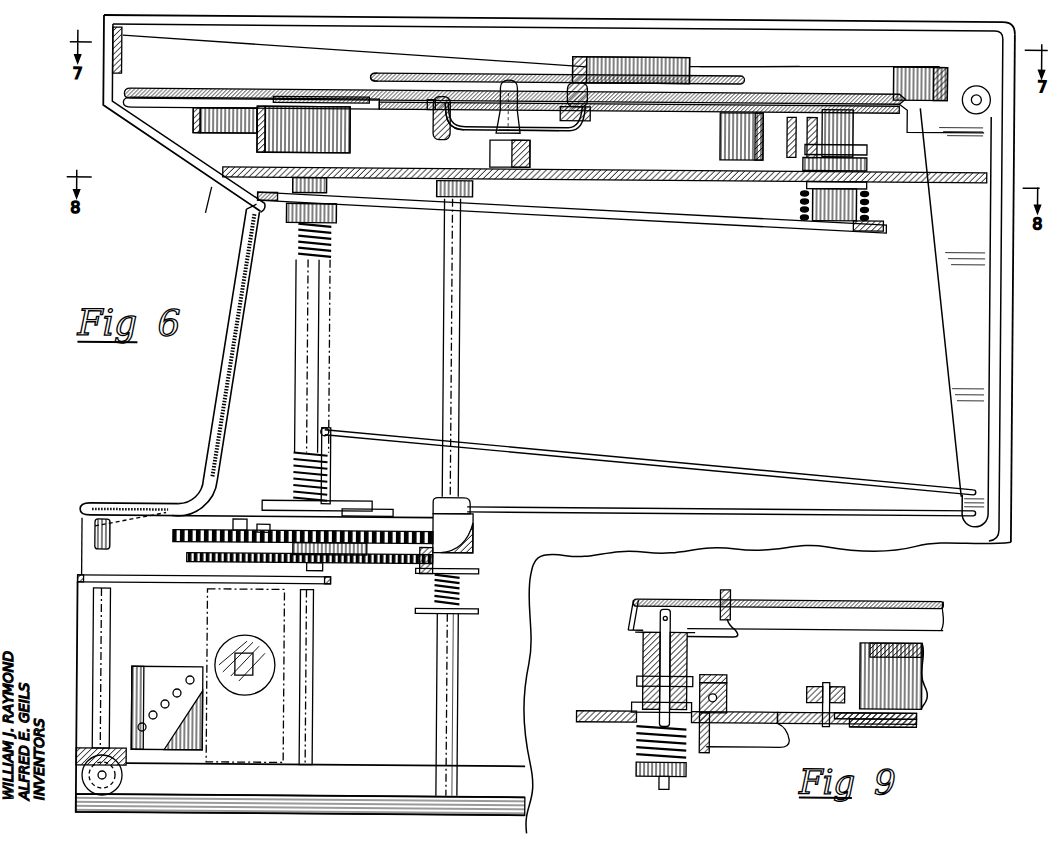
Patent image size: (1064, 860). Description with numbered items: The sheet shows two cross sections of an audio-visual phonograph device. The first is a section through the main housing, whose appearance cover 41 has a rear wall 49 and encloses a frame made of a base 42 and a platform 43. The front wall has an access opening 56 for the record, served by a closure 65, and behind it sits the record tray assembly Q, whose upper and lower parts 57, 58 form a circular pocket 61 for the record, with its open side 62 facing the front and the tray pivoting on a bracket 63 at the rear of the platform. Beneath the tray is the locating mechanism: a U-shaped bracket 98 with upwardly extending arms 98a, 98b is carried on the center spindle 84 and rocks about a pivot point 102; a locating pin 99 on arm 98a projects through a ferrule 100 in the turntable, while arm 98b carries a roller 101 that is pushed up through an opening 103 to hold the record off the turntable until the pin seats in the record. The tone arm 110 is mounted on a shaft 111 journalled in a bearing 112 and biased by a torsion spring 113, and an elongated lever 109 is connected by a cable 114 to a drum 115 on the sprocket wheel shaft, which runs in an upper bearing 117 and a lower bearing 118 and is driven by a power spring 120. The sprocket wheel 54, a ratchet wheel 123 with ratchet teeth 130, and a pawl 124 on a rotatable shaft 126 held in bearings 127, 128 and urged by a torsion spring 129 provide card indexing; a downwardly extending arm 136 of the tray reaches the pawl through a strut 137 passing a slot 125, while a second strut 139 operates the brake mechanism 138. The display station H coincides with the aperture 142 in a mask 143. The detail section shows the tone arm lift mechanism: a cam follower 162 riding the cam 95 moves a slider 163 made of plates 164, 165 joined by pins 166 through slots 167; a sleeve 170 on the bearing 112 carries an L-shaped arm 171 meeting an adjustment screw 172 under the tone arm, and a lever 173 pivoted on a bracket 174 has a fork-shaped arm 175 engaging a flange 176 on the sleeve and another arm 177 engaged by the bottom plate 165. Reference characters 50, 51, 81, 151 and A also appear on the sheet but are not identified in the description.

In FIG. 6, the appearance cover 41 is at (672, 16).
In FIG. 6, the base 42 is at (363, 764).
In FIG. 9, the platform 43 is at (596, 719).
In FIG. 6, the rear wall 49 is at (1016, 329).
In FIG. 6, the inclined panel 50 is at (240, 262).
In FIG. 6, the bottom plate 51 is at (110, 503).
In FIG. 6, the sprocket wheel 54 is at (177, 536).
In FIG. 6, the access opening 56 is at (213, 188).
In FIG. 6, the upper tray part 57 is at (415, 76).
In FIG. 6, the lower tray part 58 is at (163, 100).
In FIG. 6, the circular pocket 61 is at (645, 88).
In FIG. 6, the open side 62 is at (371, 78).
In FIG. 6, the bracket 63 is at (979, 80).
In FIG. 6, the closure 65 is at (166, 146).
In FIG. 6, the channel 81 is at (711, 62).
In FIG. 6, the center spindle 84 is at (508, 77).
In FIG. 9, the cam 95 is at (865, 666).
In FIG. 6, the U-shaped bracket 98 is at (574, 127).
In FIG. 6, the bracket arm 98a is at (540, 122).
In FIG. 6, the bracket arm 98b is at (452, 127).
In FIG. 6, the locating pin 99 is at (584, 79).
In FIG. 6, the ferrule 100 is at (594, 110).
In FIG. 6, the roller 101 is at (434, 130).
In FIG. 6, the pivot point 102 is at (531, 148).
In FIG. 6, the opening 103 is at (430, 106).
In FIG. 6, the lever 109 is at (681, 219).
In FIG. 9, the tone arm 110 is at (826, 595).
In FIG. 9, the shaft 111 is at (662, 612).
In FIG. 9, the bearing 112 is at (648, 636).
In FIG. 6, the torsion spring 113 is at (872, 203).
In FIG. 6, the cable 114 is at (275, 202).
In FIG. 6, the drum 115 is at (345, 203).
In FIG. 6, the upper bearing 117 is at (329, 185).
In FIG. 6, the lower bearing 118 is at (310, 573).
In FIG. 6, the power spring 120 is at (297, 470).
In FIG. 6, the ratchet wheel 123 is at (354, 562).
In FIG. 6, the pawl 124 is at (478, 533).
In FIG. 6, the slot 125 is at (440, 503).
In FIG. 6, the rotatable shaft 126 is at (463, 336).
In FIG. 6, the bearing 127 is at (474, 187).
In FIG. 6, the bearing 128 is at (463, 645).
In FIG. 6, the torsion spring 129 is at (438, 590).
In FIG. 6, the ratchet teeth 130 is at (191, 557).
In FIG. 6, the arm 136 is at (944, 311).
In FIG. 6, the strut 137 is at (602, 504).
In FIG. 6, the brake mechanism 138 is at (345, 500).
In FIG. 6, the second strut 139 is at (568, 448).
In FIG. 6, the aperture 142 is at (246, 692).
In FIG. 6, the mask 143 is at (212, 620).
In FIG. 6, the switch plate 151 is at (168, 677).
In FIG. 9, the cam follower 162 is at (812, 681).
In FIG. 9, the slider 163 is at (923, 715).
In FIG. 9, the plate 164 is at (919, 702).
In FIG. 9, the plate 165 is at (895, 723).
In FIG. 9, the pins 166 is at (831, 721).
In FIG. 9, the slots 167 is at (848, 718).
In FIG. 6, the sleeve 170 is at (856, 120).
In FIG. 9, the sleeve 170 is at (648, 653).
In FIG. 9, the L-shaped arm 171 is at (740, 632).
In FIG. 9, the adjustment screw 172 is at (735, 586).
In FIG. 9, the lever 173 is at (733, 683).
In FIG. 9, the bracket 174 is at (709, 670).
In FIG. 9, the fork-shaped arm 175 is at (637, 702).
In FIG. 6, the flange 176 is at (869, 145).
In FIG. 9, the flange 176 is at (642, 677).
In FIG. 9, the arm 177 is at (710, 750).
In FIG. 6, the panel surface A is at (278, 88).
In FIG. 6, the display station H is at (255, 650).
In FIG. 6, the record tray assembly Q is at (864, 61).